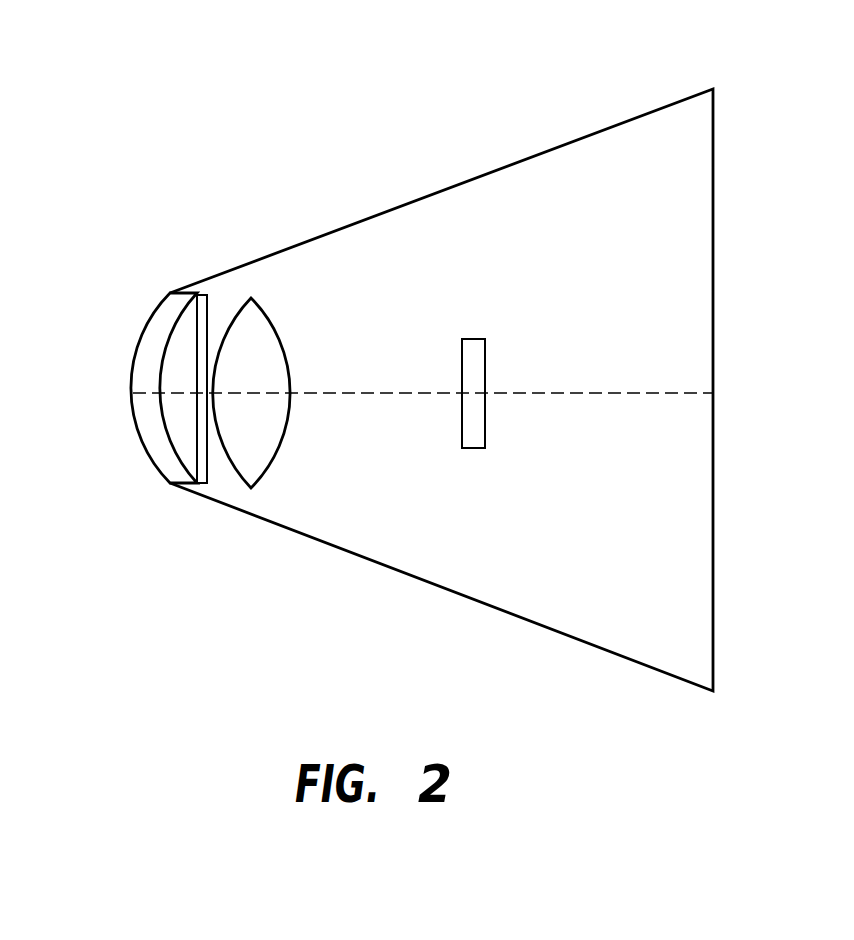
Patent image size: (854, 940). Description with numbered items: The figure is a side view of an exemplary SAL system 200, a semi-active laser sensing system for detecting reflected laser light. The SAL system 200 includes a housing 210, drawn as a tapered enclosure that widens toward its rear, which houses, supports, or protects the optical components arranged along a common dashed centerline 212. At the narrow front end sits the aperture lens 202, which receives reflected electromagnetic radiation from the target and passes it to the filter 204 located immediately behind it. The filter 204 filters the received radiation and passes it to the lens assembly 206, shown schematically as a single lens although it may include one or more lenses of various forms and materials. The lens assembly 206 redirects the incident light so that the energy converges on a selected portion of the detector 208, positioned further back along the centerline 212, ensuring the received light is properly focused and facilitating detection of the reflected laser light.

The SAL system 200 is at (262, 92).
The aperture lens 202 is at (147, 322).
The filter 204 is at (207, 295).
The lens assembly 206 is at (274, 326).
The detector 208 is at (485, 339).
The housing 210 is at (483, 173).
The optical axis 212 is at (630, 395).